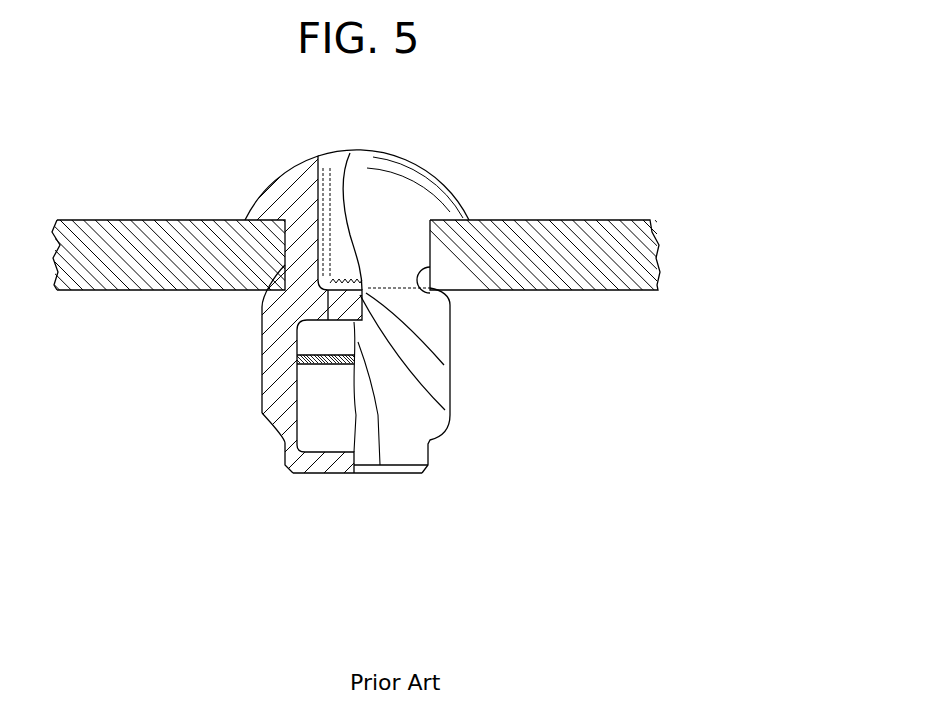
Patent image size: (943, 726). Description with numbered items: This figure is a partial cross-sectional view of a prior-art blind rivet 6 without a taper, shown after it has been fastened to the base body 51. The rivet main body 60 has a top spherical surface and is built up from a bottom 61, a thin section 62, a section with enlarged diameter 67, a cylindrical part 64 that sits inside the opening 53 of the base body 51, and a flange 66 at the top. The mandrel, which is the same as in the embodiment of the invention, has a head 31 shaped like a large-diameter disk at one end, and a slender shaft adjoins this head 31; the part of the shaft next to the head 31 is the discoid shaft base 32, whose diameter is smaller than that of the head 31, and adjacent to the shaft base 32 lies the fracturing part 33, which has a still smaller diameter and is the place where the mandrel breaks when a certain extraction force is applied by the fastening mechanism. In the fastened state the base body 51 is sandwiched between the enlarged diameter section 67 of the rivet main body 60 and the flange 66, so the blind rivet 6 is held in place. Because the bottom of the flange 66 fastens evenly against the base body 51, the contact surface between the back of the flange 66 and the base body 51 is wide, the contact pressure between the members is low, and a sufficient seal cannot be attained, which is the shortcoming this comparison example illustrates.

The blind rivet 6 is at (590, 189).
The head 31 is at (380, 477).
The shaft base 32 is at (432, 404).
The fracturing part 33 is at (436, 348).
The base body 51 is at (555, 292).
The opening 53 is at (433, 293).
The rivet main body 60 is at (353, 321).
The bottom 61 is at (317, 475).
The thin section 62 is at (282, 443).
The cylindrical part 64 is at (257, 303).
The flange 66 is at (283, 166).
The section with enlarged diameter 67 is at (261, 384).